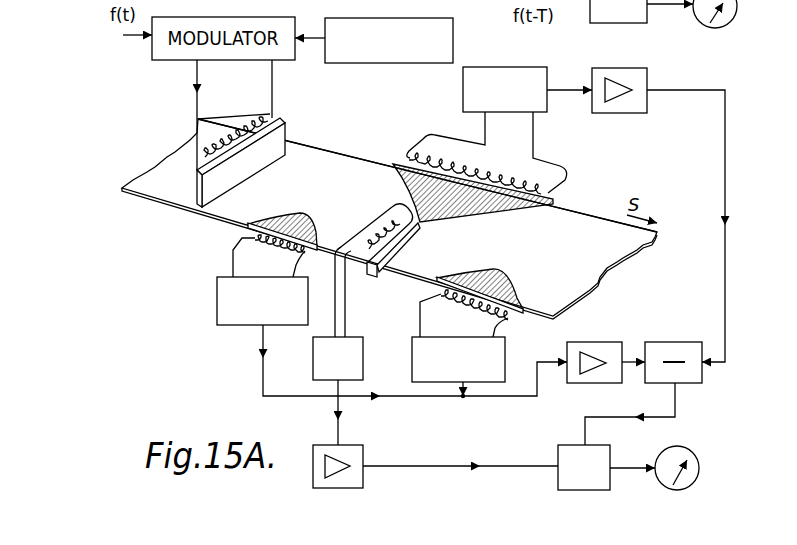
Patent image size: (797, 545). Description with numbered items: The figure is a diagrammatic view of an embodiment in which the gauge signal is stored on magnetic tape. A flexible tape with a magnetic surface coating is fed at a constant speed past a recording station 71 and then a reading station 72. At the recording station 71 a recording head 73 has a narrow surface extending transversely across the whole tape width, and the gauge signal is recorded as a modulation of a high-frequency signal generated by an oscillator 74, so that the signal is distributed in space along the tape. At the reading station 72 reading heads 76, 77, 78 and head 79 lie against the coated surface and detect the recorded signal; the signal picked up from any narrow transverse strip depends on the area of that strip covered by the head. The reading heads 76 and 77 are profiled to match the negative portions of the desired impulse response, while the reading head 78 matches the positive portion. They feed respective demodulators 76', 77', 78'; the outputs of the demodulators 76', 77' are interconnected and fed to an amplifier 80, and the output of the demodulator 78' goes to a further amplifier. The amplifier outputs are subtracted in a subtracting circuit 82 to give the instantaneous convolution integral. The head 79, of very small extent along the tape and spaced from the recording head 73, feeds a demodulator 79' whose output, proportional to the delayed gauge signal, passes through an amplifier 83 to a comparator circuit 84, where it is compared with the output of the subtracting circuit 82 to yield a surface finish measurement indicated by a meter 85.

The recording station 71 is at (188, 221).
The reading station 72 is at (338, 162).
The recording head 73 is at (286, 127).
The oscillator 74 is at (385, 18).
The reading head 76 is at (275, 233).
The demodulator 76' is at (241, 304).
The reading head 77 is at (493, 296).
The demodulator 77' is at (486, 354).
The reading head 78 is at (494, 167).
The demodulator 78' is at (527, 104).
The head 79 is at (377, 270).
The demodulator 79' is at (352, 346).
The amplifier 80 is at (600, 342).
The subtracting circuit 82 is at (670, 342).
The amplifier 83 is at (363, 446).
The comparator circuit 84 is at (593, 488).
The meter 85 is at (662, 483).